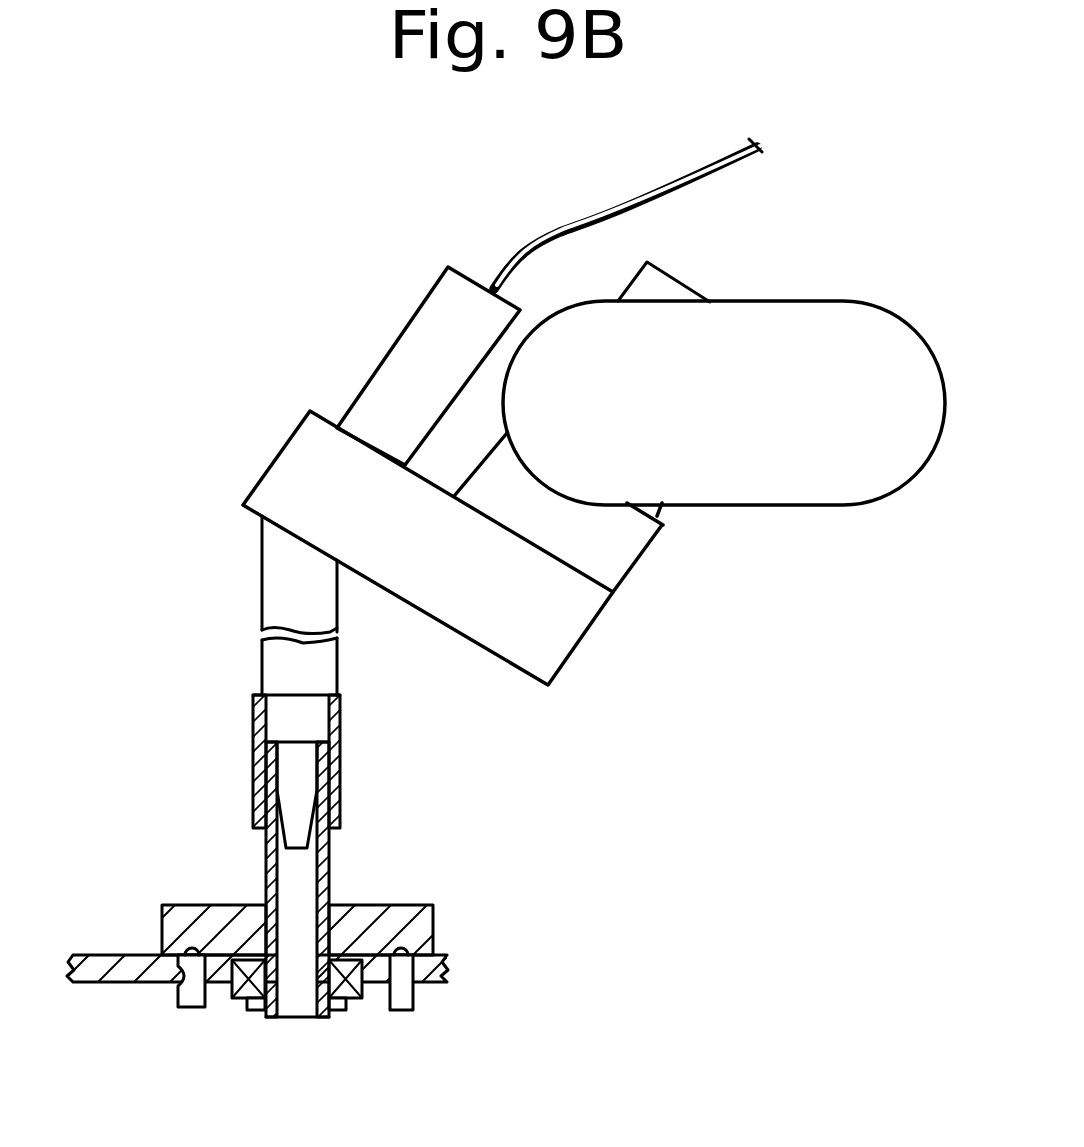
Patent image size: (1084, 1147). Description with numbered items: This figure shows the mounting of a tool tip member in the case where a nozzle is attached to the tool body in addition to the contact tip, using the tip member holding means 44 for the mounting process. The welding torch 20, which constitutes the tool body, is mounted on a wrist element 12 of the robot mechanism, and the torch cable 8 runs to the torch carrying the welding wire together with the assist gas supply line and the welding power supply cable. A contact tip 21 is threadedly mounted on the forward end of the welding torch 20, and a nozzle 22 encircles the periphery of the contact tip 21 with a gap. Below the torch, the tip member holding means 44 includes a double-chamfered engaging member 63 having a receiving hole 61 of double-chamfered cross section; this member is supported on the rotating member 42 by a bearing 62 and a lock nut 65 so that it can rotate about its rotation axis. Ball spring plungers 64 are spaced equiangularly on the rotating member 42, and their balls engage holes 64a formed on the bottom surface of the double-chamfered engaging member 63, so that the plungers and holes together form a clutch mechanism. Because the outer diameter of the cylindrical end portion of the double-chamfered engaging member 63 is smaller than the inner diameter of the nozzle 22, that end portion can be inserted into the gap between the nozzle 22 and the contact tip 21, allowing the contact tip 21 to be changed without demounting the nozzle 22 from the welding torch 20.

The torch cable 8 is at (633, 207).
The wrist element 12 is at (787, 317).
The welding torch 20 is at (393, 350).
The contact tip 21 is at (302, 763).
The nozzle 22 is at (343, 718).
The rotating member 42 is at (447, 963).
The tip member holding means for the mounting process 44 is at (472, 826).
The receiving hole 61 is at (280, 870).
The bearing 62 is at (352, 1002).
The double-chamfered engaging member 63 is at (330, 848).
The ball spring plungers 64 is at (418, 1002).
The holes 64a is at (175, 990).
The lock nut 65 is at (252, 1005).